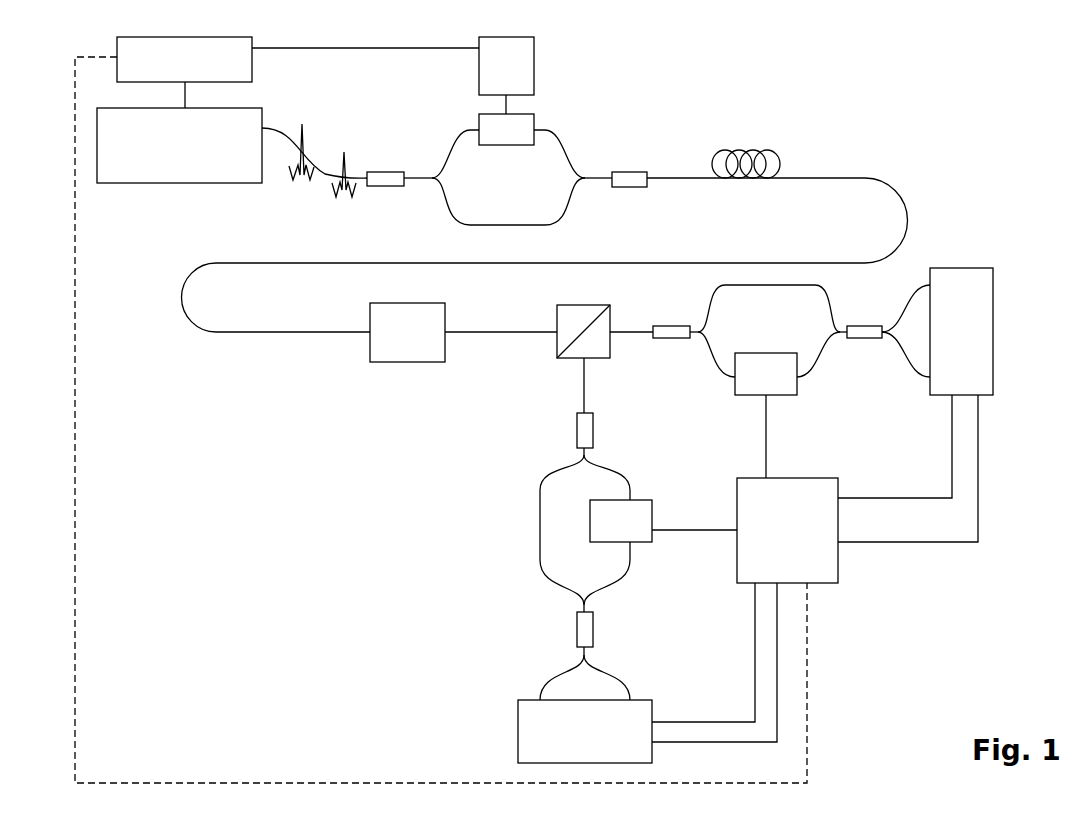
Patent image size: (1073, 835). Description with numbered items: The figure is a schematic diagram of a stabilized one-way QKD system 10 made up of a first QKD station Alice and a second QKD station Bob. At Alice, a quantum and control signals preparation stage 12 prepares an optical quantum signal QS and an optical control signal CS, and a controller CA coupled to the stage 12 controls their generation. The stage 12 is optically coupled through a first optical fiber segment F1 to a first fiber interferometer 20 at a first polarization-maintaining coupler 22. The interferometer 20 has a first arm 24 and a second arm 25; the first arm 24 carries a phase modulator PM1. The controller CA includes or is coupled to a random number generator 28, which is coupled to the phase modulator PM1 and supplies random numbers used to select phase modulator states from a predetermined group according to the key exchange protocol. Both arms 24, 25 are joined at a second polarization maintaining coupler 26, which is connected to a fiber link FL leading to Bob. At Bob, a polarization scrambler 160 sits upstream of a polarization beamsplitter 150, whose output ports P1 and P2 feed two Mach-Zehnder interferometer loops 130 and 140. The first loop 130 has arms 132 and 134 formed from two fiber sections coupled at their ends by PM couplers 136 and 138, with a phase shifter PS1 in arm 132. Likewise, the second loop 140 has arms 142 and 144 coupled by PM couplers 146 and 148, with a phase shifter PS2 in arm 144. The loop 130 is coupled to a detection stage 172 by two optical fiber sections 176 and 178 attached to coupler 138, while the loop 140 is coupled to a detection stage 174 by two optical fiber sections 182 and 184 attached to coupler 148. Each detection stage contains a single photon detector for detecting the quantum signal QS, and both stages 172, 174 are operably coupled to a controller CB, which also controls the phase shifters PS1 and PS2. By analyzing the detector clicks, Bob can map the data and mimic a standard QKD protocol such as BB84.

The QKD system 10 is at (975, 140).
The quantum and control signals preparation (QCSP) stage 12 is at (179, 145).
The controller CA is at (184, 59).
The random number generator (RNG) 28 is at (506, 66).
The phase modulator PM1 is at (506, 129).
The first fiber interferometer 20 is at (508, 158).
The first polarization-maintaining (PM) coupler 22 is at (386, 172).
The first arm 24 is at (563, 152).
The second arm 25 is at (455, 221).
The second polarization maintaining coupler 26 is at (655, 187).
The optical quantum signal QS is at (301, 123).
The optical control signal CS is at (352, 199).
The first optical fiber segment F1 is at (322, 177).
The fiber link FL is at (882, 178).
The first QKD station Alice is at (612, 108).
The second QKD station Bob is at (362, 532).
The polarization scrambler 160 is at (407, 332).
The polarization beamsplitter 150 is at (560, 310).
The output port P1 is at (571, 356).
The output port P2 is at (612, 322).
The PM coupler 146 is at (662, 340).
The second interferometer branch (loop) 140 is at (820, 312).
The arm 142 is at (716, 300).
The arm 144 is at (812, 378).
The phase shifter PS2 is at (766, 374).
The PM coupler 148 is at (858, 339).
The detection stage 174 is at (961, 331).
The optical fiber section 182 is at (924, 292).
The optical fiber section 184 is at (922, 376).
The controller CB is at (787, 530).
The PM coupler 136 is at (576, 425).
The first interferometer branch (loop) 130 is at (561, 524).
The arm 132 is at (546, 478).
The arm 134 is at (612, 478).
The phase shifter PS1 is at (621, 521).
The PM coupler 138 is at (580, 629).
The optical fiber section 176 is at (540, 690).
The optical fiber section 178 is at (612, 686).
The detection stage 172 is at (585, 731).